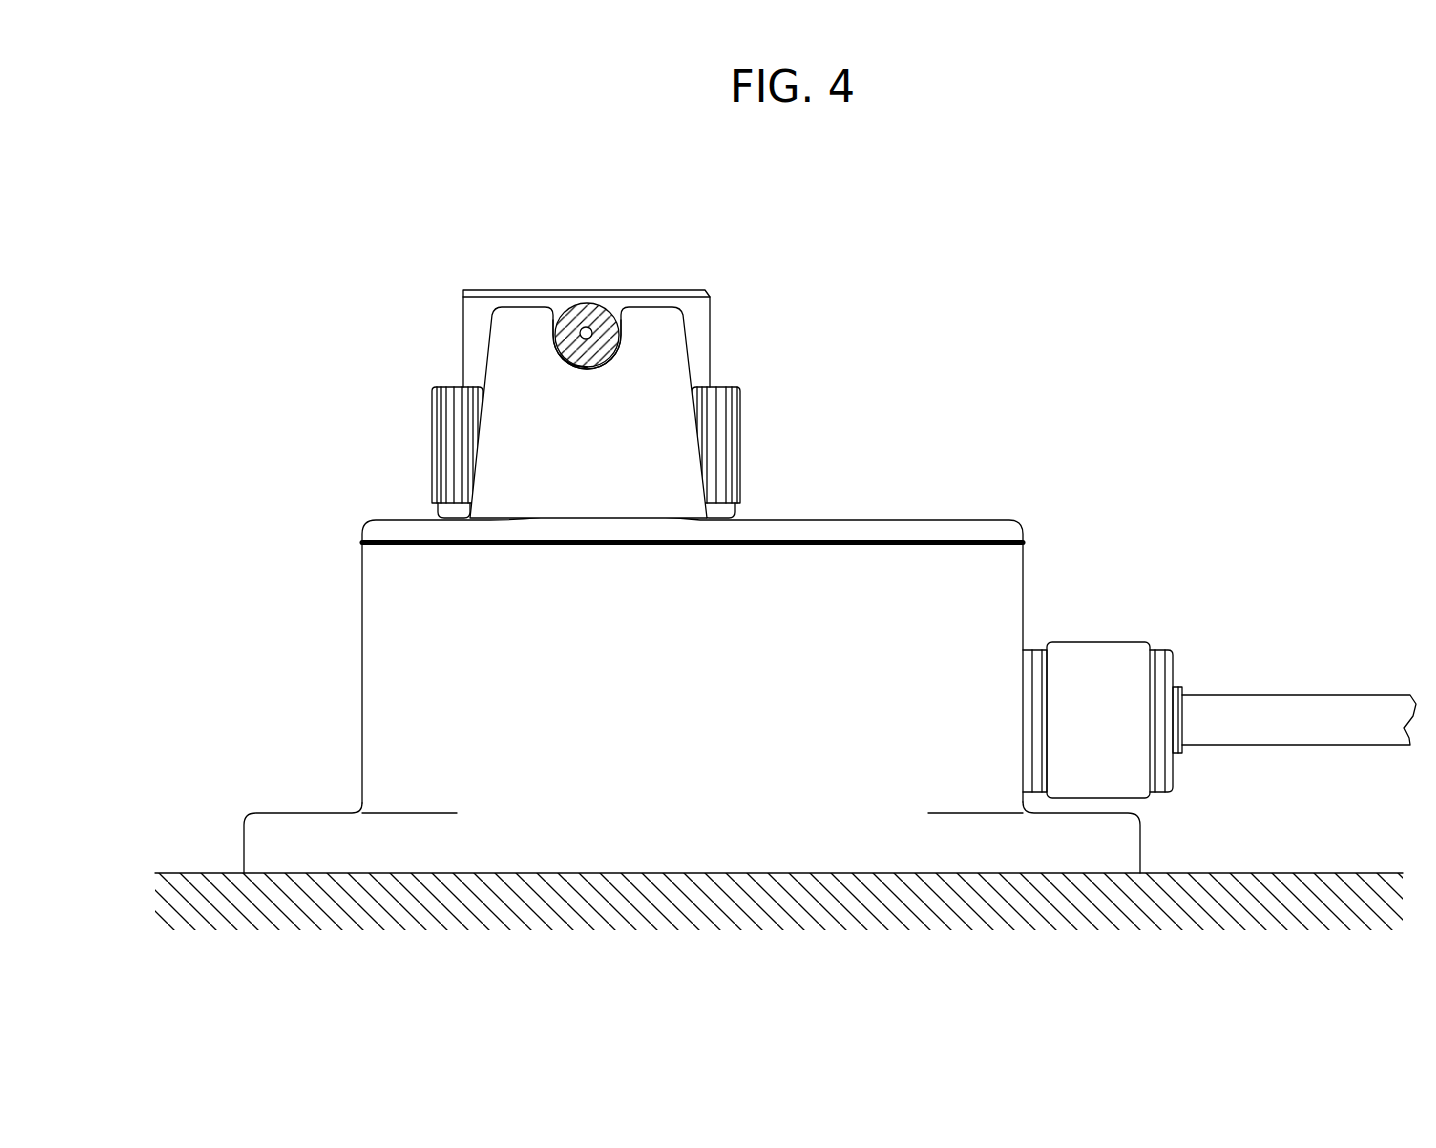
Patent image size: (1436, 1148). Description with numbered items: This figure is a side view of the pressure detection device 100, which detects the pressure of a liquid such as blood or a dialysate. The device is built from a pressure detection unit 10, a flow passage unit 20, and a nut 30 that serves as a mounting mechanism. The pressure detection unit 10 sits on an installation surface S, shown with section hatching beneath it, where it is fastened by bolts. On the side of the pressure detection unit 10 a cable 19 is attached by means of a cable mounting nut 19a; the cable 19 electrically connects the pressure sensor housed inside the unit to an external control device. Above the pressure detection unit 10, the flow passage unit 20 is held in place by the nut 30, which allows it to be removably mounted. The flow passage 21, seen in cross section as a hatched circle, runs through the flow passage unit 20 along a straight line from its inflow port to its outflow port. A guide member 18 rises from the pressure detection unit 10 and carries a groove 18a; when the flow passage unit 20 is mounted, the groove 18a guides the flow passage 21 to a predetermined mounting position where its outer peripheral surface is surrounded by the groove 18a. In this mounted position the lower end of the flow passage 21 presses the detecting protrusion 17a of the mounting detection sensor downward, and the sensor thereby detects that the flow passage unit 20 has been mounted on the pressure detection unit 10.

The pressure detection device 100 is at (945, 236).
The pressure detection unit 10 is at (1020, 520).
The detecting protrusion 17a is at (565, 363).
The guide member 18 is at (688, 347).
The groove 18a is at (619, 350).
The cable 19 is at (1253, 693).
The cable mounting nut 19a is at (1113, 641).
The flow passage unit 20 is at (713, 290).
The flow passage 21 is at (582, 302).
The nut 30 is at (741, 443).
The installation surface S is at (190, 872).